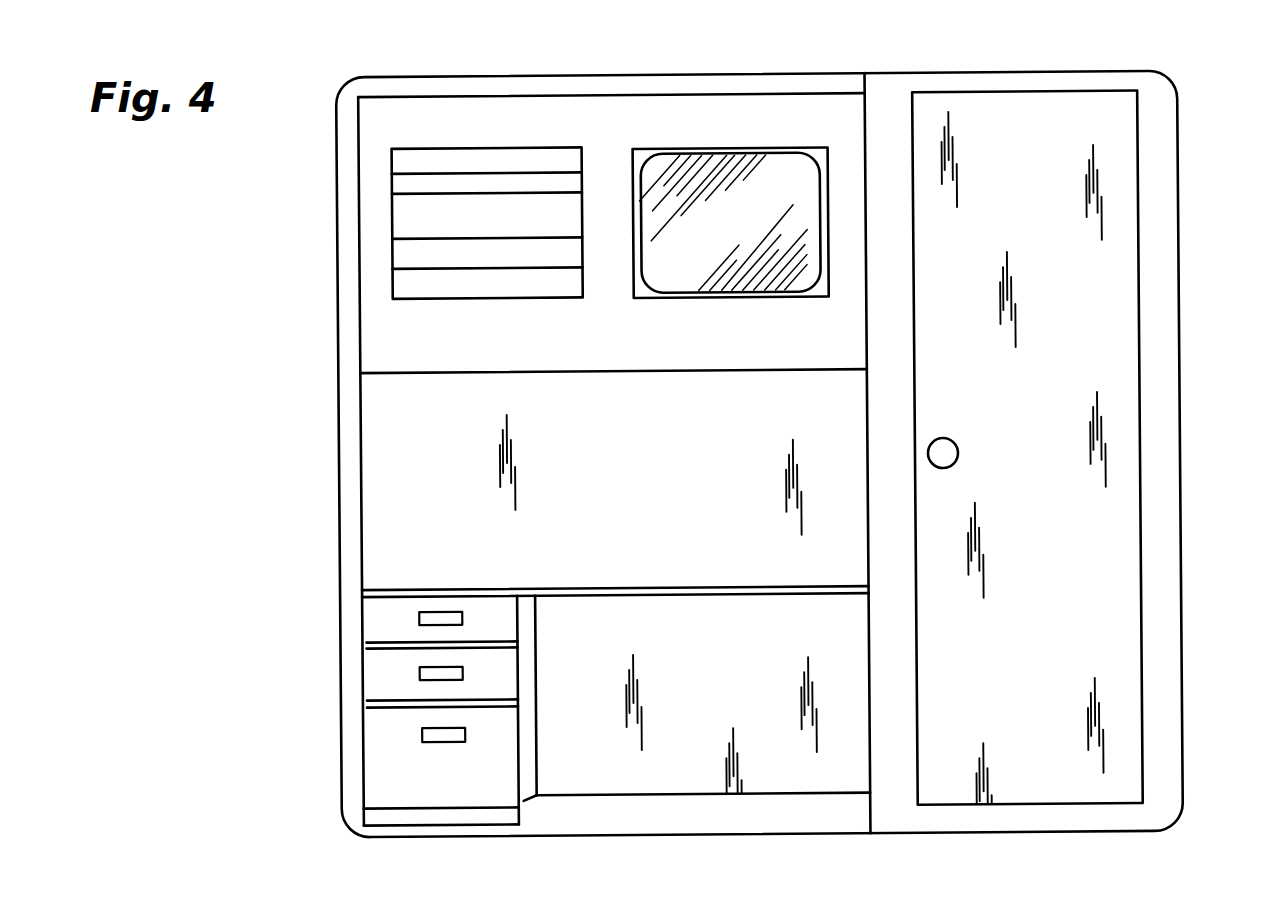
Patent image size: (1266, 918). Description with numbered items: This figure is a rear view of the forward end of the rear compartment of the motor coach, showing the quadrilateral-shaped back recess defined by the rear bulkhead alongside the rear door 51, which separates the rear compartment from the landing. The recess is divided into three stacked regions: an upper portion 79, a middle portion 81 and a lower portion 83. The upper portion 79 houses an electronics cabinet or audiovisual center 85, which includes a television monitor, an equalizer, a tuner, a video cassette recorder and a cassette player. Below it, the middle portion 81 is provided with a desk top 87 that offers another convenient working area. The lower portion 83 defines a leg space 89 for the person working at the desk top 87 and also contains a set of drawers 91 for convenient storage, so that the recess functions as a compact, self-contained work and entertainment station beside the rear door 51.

The rear door 51 is at (1141, 337).
The upper portion 79 is at (359, 168).
The middle portion 81 is at (360, 442).
The lower portion 83 is at (364, 660).
The electronics cabinet or audiovisual center 85 is at (428, 110).
The desk top 87 is at (664, 587).
The leg space 89 is at (698, 772).
The set of drawers 91 is at (526, 793).